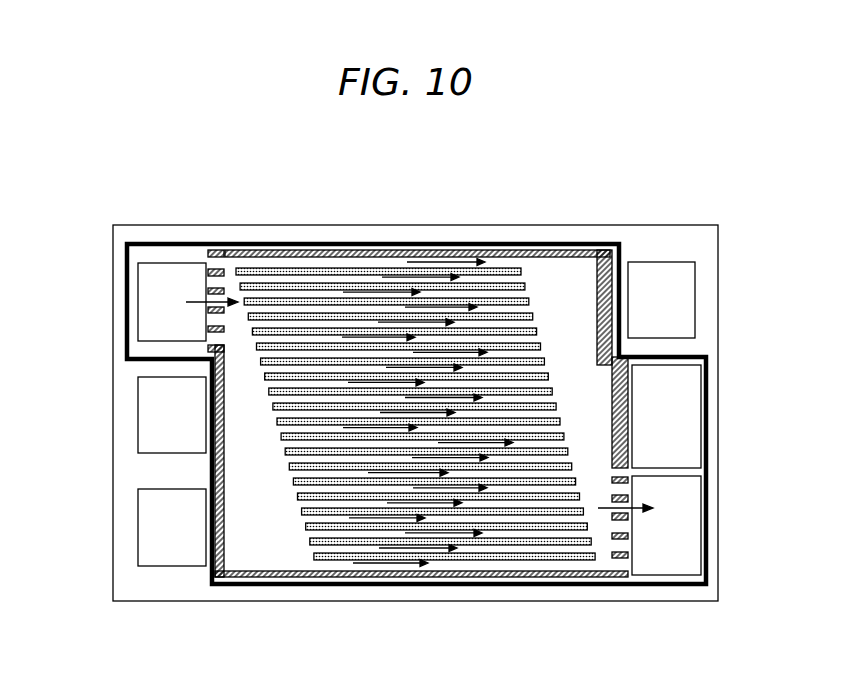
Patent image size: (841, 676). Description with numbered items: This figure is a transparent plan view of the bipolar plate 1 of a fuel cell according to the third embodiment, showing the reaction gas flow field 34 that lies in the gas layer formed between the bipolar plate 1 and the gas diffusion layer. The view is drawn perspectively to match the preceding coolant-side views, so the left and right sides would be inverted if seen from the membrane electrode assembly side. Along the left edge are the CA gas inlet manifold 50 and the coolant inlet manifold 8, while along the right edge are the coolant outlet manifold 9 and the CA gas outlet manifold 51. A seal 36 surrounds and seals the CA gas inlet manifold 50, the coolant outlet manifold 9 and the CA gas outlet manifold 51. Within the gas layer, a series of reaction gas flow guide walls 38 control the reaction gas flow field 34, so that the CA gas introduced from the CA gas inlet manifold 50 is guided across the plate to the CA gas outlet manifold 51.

The bipolar plate 1 is at (328, 235).
The reaction gas flow field 34 is at (418, 270).
The reaction gas flow guide walls 38 is at (490, 288).
The seal 36 is at (458, 588).
The CA gas inlet manifold 50 is at (152, 303).
The coolant inlet manifold 8 is at (150, 413).
The coolant outlet manifold 9 is at (687, 413).
The CA gas outlet manifold 51 is at (687, 525).